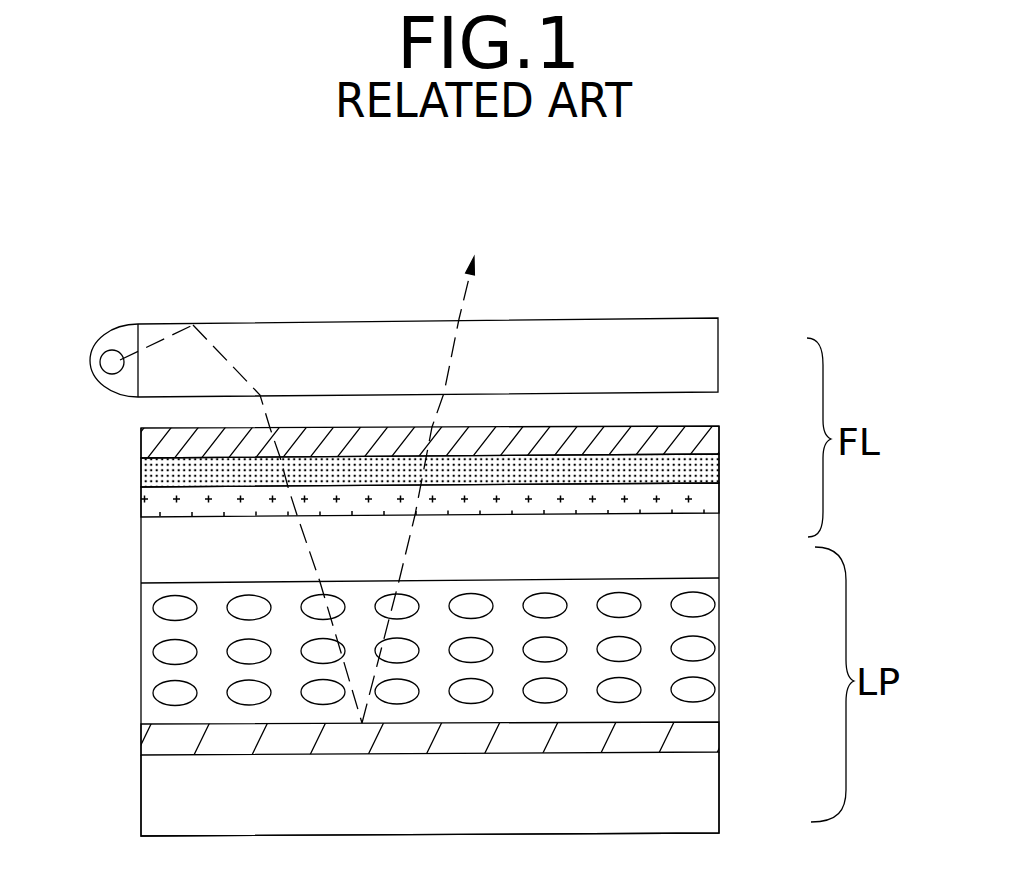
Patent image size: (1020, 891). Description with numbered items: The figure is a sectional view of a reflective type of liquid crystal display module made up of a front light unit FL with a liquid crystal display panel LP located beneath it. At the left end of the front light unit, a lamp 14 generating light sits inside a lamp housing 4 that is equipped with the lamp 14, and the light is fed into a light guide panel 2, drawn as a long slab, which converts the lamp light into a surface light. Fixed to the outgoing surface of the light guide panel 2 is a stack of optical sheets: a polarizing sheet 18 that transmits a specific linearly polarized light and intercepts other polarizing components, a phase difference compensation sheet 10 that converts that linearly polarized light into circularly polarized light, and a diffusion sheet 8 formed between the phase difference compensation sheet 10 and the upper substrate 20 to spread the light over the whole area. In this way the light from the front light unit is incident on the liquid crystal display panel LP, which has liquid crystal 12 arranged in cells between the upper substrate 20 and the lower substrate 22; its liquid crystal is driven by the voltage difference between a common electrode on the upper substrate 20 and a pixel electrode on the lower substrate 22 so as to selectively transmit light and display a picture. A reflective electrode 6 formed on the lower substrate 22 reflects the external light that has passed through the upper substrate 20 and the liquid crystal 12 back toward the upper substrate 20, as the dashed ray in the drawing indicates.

The light guide panel 2 is at (718, 357).
The lamp housing 4 is at (90, 350).
The lamp 14 is at (100, 372).
The polarizing sheet 18 is at (719, 433).
The phase difference compensation sheet 10 is at (719, 473).
The diffusion sheet 8 is at (713, 503).
The upper substrate 20 is at (719, 563).
The liquid crystal 12 is at (688, 661).
The reflective electrode 6 is at (712, 740).
The lower substrate 22 is at (719, 790).